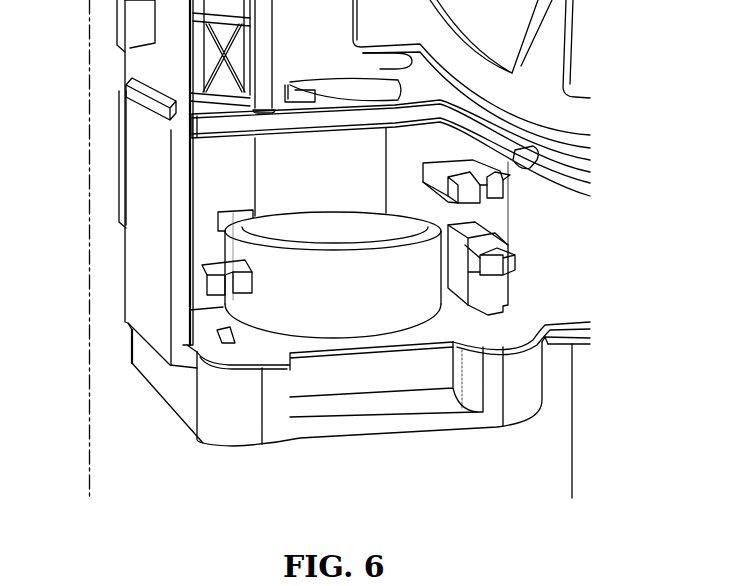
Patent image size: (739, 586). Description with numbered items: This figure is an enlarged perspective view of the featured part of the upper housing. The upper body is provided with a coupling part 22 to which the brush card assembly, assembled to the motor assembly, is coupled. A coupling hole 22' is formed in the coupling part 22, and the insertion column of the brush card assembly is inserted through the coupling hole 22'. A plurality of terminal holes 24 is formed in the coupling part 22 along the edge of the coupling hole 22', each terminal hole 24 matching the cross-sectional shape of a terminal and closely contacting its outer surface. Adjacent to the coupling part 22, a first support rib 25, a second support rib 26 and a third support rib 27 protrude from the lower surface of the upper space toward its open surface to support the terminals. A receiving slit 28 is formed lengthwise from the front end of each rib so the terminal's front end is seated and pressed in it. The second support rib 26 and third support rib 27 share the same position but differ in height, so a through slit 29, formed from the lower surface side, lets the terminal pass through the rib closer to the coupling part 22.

The coupling part 22 is at (386, 433).
The coupling hole 22' is at (205, 172).
The terminal hole 24 is at (207, 322).
The first support rib 25 is at (203, 240).
The second support rib 26 is at (515, 267).
The third support rib 27 is at (540, 158).
The receiving slit 28 is at (223, 273).
The through slit 29 is at (488, 222).